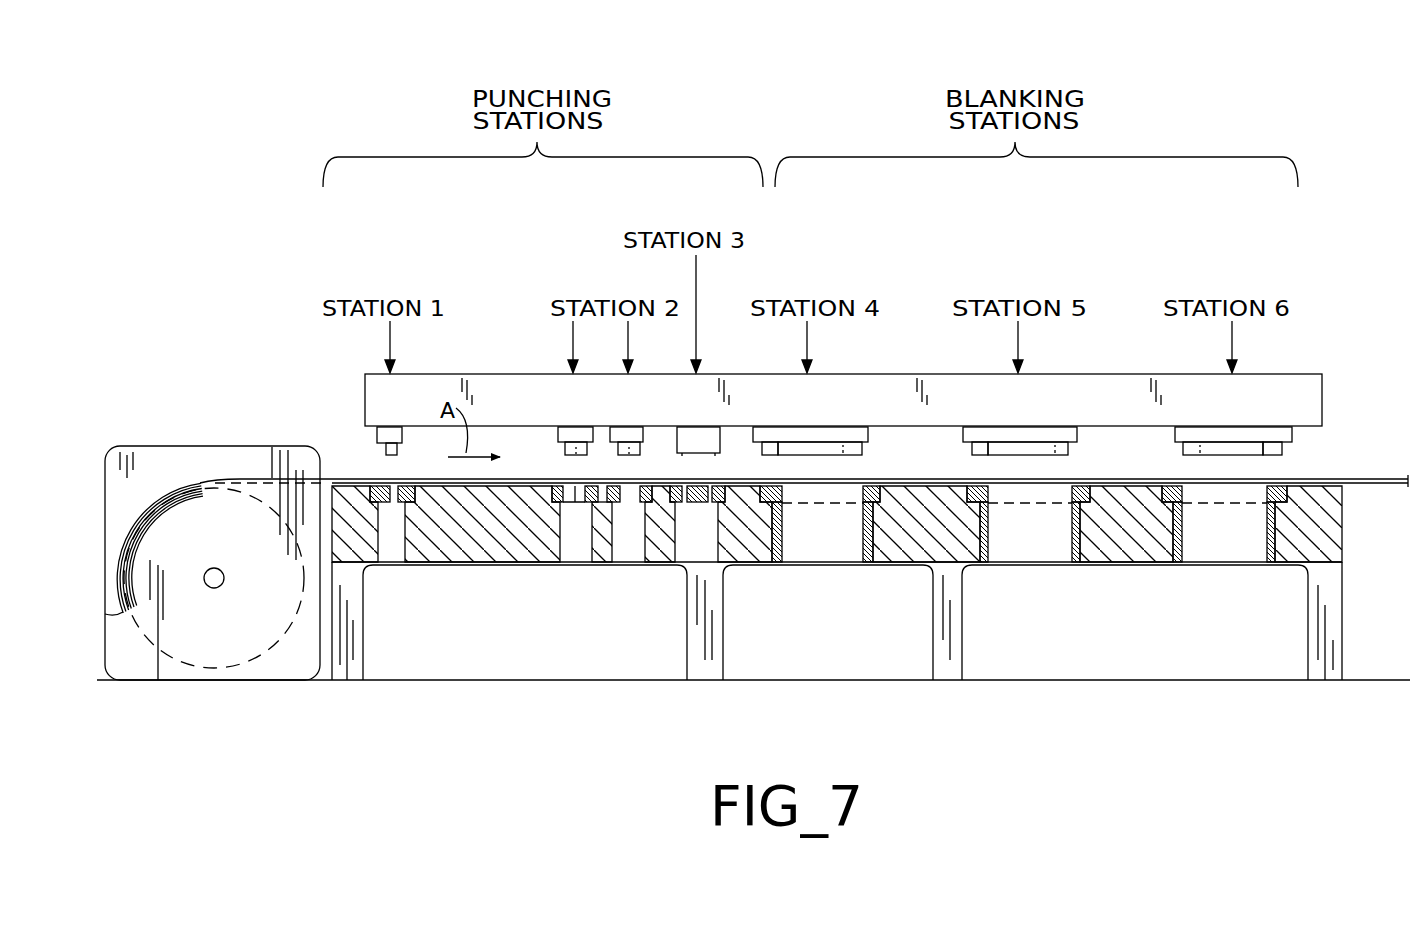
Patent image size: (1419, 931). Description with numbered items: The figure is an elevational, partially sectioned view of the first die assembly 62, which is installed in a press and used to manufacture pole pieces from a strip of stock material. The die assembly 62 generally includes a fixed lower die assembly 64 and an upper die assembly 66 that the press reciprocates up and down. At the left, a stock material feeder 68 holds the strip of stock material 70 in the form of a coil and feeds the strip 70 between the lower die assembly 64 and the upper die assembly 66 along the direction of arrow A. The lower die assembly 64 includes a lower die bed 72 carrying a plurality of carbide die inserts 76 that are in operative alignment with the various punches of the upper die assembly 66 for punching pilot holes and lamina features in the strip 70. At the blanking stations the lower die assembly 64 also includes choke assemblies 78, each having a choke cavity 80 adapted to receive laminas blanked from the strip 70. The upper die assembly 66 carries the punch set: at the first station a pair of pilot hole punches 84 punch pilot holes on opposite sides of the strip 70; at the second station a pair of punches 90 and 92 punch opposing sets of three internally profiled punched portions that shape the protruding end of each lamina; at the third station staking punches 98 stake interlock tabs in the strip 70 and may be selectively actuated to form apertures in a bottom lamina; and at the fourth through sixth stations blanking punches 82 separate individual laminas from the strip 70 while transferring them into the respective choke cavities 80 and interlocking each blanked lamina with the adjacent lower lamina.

The first die assembly 62 is at (880, 357).
The lower die assembly 64 is at (864, 516).
The upper die assembly 66 is at (1335, 386).
The stock material feeder 68 is at (152, 450).
The strip of stock material 70 is at (347, 480).
The lower die bed 72 is at (458, 548).
The carbide die inserts 76 is at (405, 487).
The choke assemblies 78 is at (869, 477).
The choke cavity 80 is at (783, 543).
The blanking punches 82 is at (815, 436).
The pilot hole punches 84 is at (392, 437).
The punch 90 is at (581, 432).
The punch 92 is at (625, 432).
The staking punches 98 is at (695, 433).